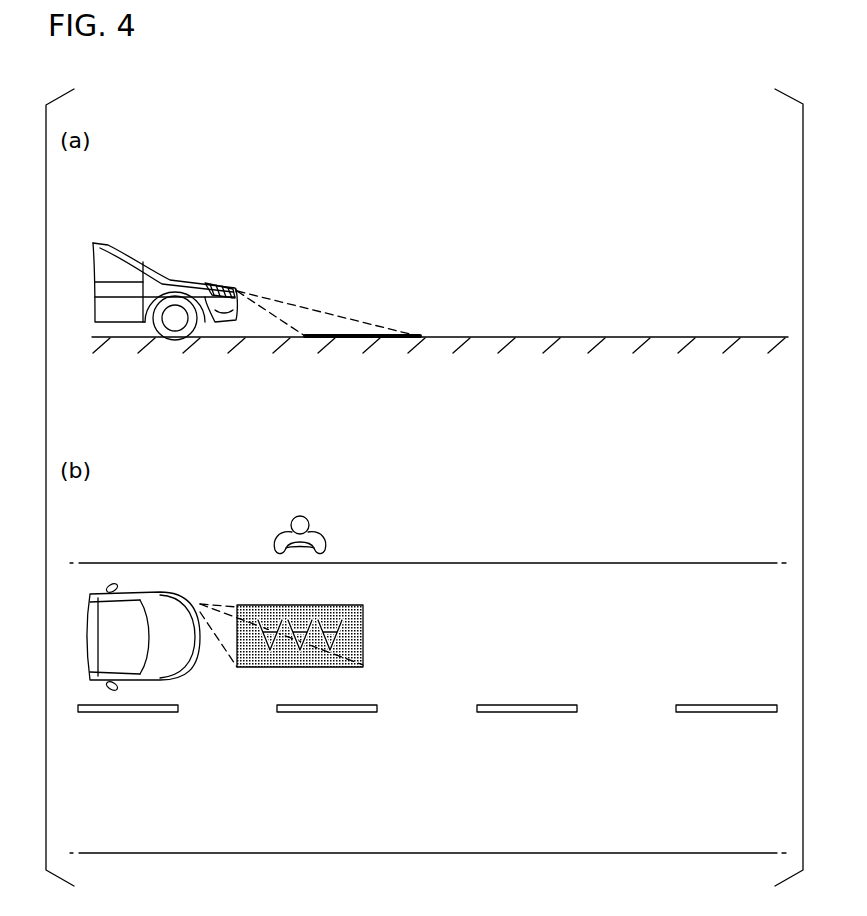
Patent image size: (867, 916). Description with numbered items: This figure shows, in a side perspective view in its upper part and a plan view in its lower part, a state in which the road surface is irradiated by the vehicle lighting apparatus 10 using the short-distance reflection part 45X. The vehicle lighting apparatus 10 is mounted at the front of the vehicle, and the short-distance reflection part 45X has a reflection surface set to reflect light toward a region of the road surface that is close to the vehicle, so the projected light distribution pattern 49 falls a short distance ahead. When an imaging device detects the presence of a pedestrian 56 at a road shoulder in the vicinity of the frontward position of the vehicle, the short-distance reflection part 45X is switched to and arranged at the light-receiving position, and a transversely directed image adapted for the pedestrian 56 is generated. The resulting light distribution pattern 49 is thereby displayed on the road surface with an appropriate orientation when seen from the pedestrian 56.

The vehicle lighting apparatus 10 is at (230, 281).
The short-distance reflection part 45X is at (215, 283).
The light distribution pattern 49 is at (372, 336).
The pedestrian 56 is at (310, 516).